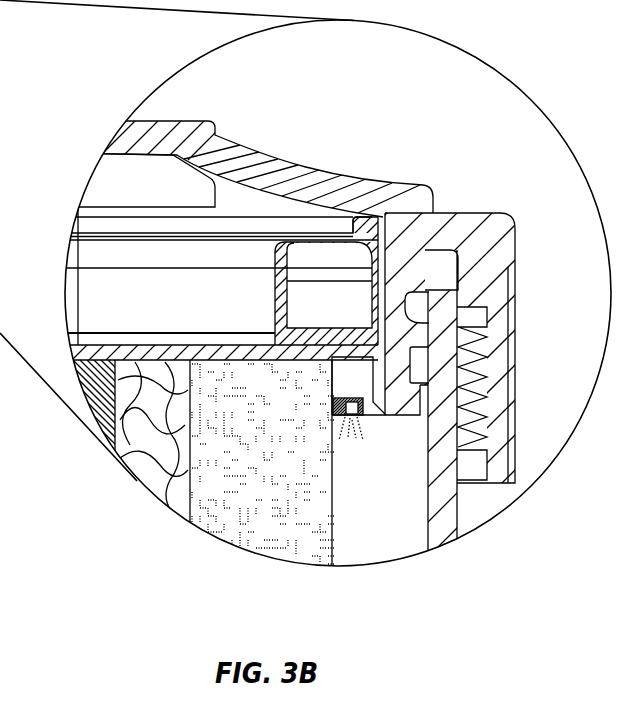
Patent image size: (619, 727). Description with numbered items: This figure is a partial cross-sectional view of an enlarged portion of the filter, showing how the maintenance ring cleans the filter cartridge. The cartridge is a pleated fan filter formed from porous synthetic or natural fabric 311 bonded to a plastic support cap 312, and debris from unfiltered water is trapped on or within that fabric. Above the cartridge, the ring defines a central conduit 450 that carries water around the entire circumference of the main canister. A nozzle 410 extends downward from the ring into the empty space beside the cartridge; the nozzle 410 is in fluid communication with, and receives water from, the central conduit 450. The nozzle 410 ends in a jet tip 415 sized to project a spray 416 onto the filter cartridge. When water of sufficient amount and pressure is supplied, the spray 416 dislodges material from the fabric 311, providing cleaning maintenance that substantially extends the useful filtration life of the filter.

The porous fabric 311 is at (280, 517).
The plastic support cap 312 is at (213, 355).
The nozzle 410 is at (357, 377).
The jet tip 415 is at (368, 407).
The spray 416 is at (337, 422).
The central conduit 450 is at (340, 300).